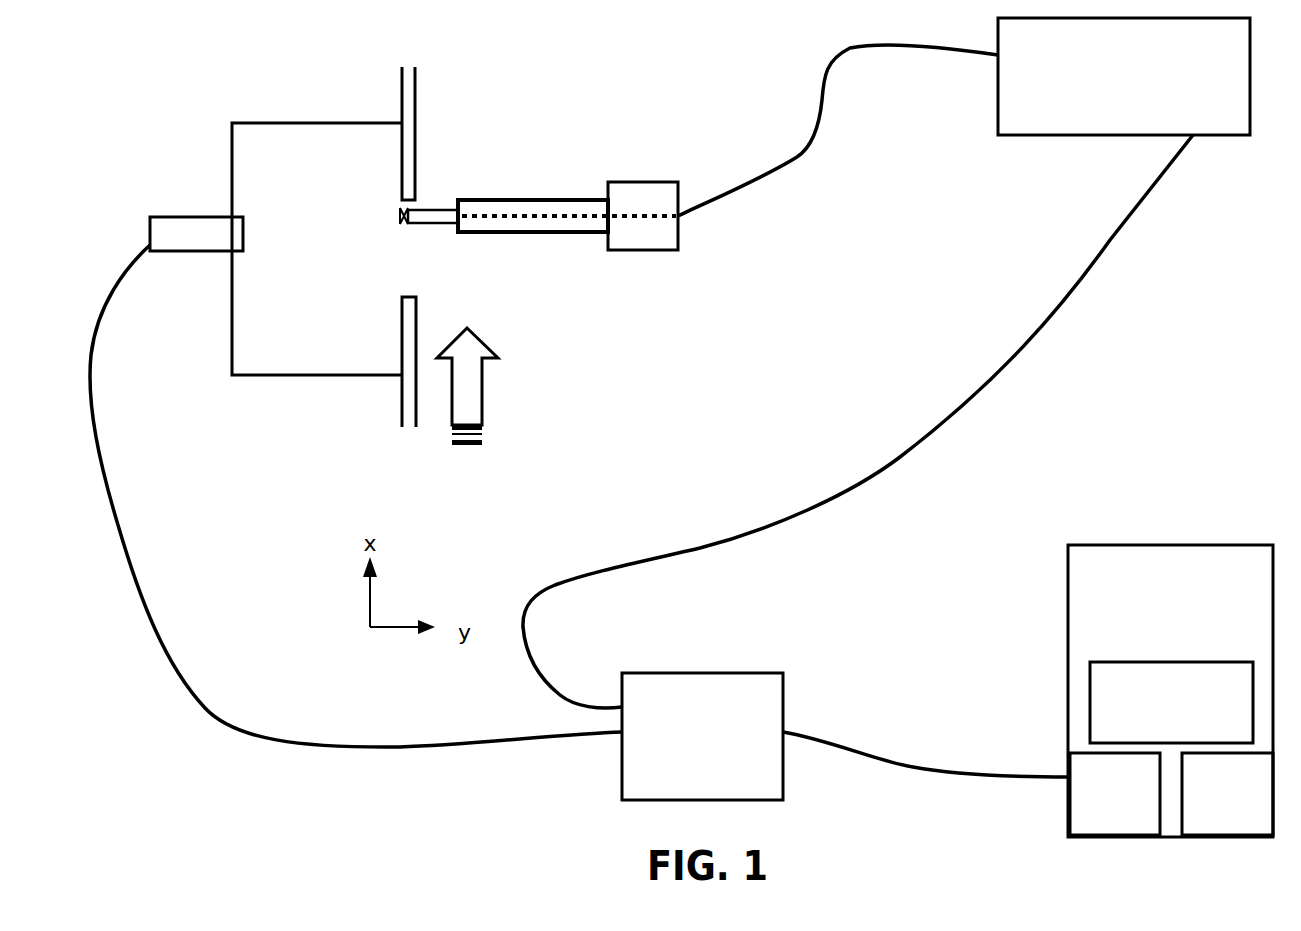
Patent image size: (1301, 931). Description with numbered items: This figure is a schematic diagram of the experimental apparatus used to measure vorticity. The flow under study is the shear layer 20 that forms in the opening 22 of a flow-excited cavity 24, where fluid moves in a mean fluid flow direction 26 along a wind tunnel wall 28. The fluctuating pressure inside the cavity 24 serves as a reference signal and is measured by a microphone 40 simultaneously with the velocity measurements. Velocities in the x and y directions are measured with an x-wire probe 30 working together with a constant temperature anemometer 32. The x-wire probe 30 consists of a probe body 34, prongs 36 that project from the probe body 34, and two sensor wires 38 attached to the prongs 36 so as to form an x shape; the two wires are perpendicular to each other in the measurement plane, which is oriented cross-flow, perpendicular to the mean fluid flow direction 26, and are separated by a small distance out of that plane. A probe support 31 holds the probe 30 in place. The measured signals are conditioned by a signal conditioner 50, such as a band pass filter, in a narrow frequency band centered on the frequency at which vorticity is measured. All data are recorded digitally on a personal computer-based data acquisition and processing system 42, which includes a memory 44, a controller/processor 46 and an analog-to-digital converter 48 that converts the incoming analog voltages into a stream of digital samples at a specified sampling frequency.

The shear layer 20 is at (392, 240).
The opening 22 is at (400, 260).
The flow-excited cavity 24 is at (335, 170).
The mean fluid flow direction 26 is at (482, 390).
The wind tunnel wall 28 is at (415, 115).
The x-wire probe 30 is at (554, 219).
The probe support 31 is at (655, 227).
The constant temperature anemometer 32 is at (886, 363).
The probe body 34 is at (563, 205).
The prongs 36 is at (427, 205).
The sensor wires 38 is at (407, 227).
The microphone 40 is at (198, 208).
The personal computer-based data acquisition and processing system 42 is at (1170, 691).
The memory 44 is at (1227, 794).
The controller/processor 46 is at (1171, 702).
The analog-to-digital converter 48 is at (1115, 794).
The signal conditioner 50 is at (846, 736).